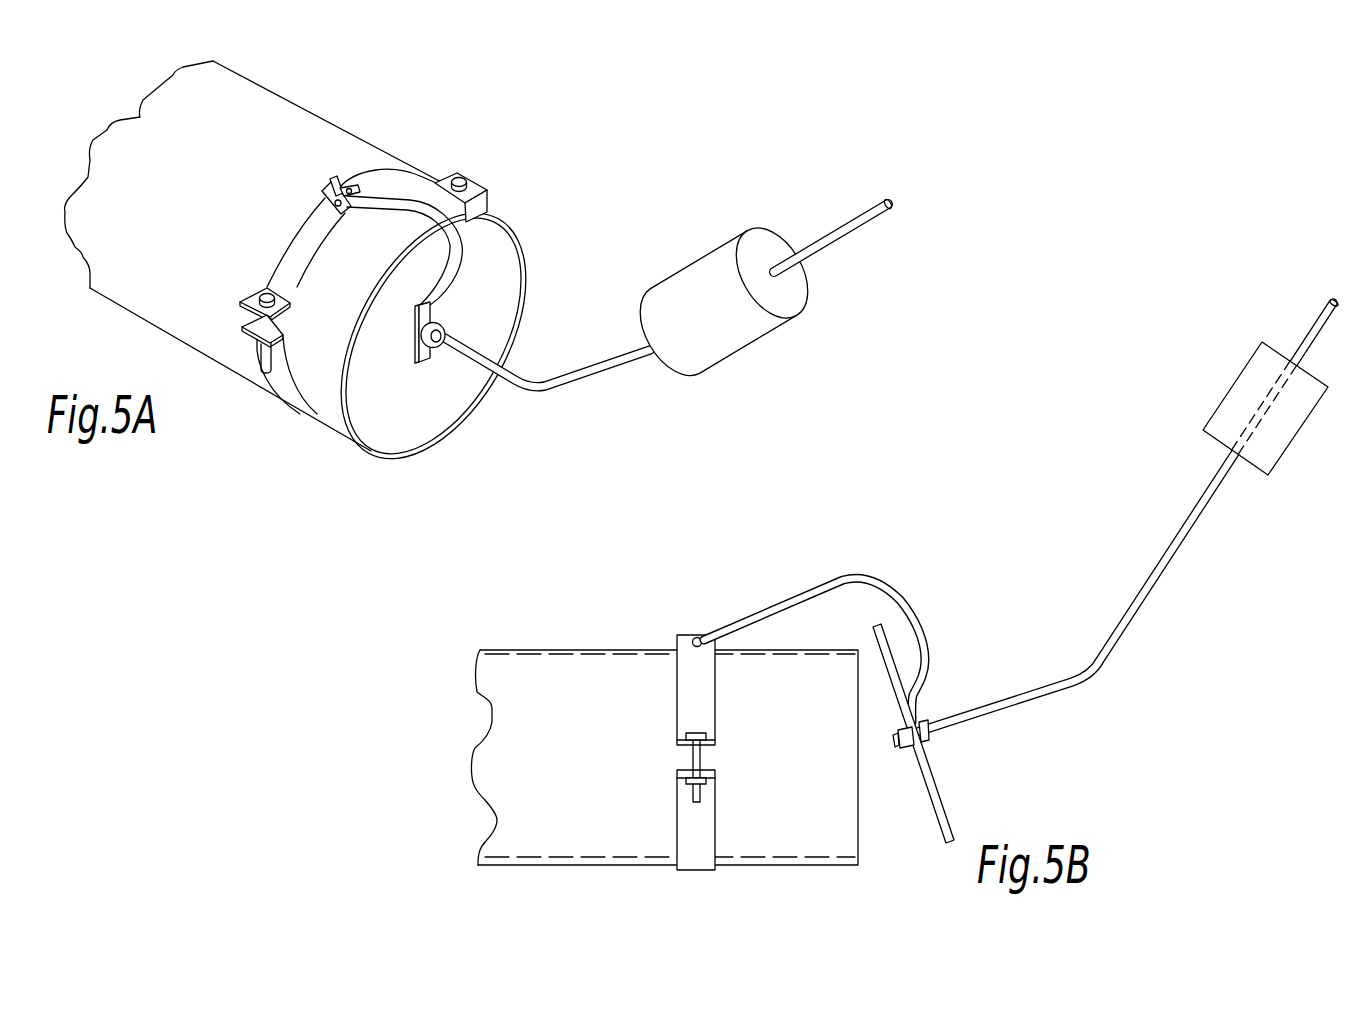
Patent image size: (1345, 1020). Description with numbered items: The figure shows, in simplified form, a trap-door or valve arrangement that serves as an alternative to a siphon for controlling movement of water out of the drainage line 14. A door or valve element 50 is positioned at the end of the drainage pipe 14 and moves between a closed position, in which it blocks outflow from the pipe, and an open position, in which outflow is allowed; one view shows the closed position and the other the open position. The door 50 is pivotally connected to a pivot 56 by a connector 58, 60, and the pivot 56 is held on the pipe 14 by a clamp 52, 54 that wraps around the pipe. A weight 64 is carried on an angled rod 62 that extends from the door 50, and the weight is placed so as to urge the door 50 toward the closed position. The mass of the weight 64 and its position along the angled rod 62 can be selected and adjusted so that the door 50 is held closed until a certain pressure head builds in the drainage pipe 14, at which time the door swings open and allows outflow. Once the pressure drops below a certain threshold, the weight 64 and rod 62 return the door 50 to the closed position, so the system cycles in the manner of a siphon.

In FIG. 5A, the drainage line 14 is at (322, 96).
In FIG. 5B, the drainage line 14 is at (520, 645).
In FIG. 5A, the door or valve element 50 is at (493, 312).
In FIG. 5B, the door or valve element 50 is at (940, 805).
In FIG. 5A, the clamp 52 is at (363, 168).
In FIG. 5B, the clamp 52 is at (713, 705).
In FIG. 5A, the clamp 54 is at (462, 180).
In FIG. 5B, the clamp 54 is at (696, 733).
In FIG. 5A, the pivot 56 is at (335, 180).
In FIG. 5B, the pivot 56 is at (697, 637).
In FIG. 5A, the connector 58 is at (460, 263).
In FIG. 5B, the connector 58 is at (912, 600).
In FIG. 5A, the connector 60 is at (423, 345).
In FIG. 5A, the angled rod 62 is at (540, 400).
In FIG. 5B, the angled rod 62 is at (1052, 692).
In FIG. 5A, the weight 64 is at (705, 262).
In FIG. 5B, the weight 64 is at (1232, 392).